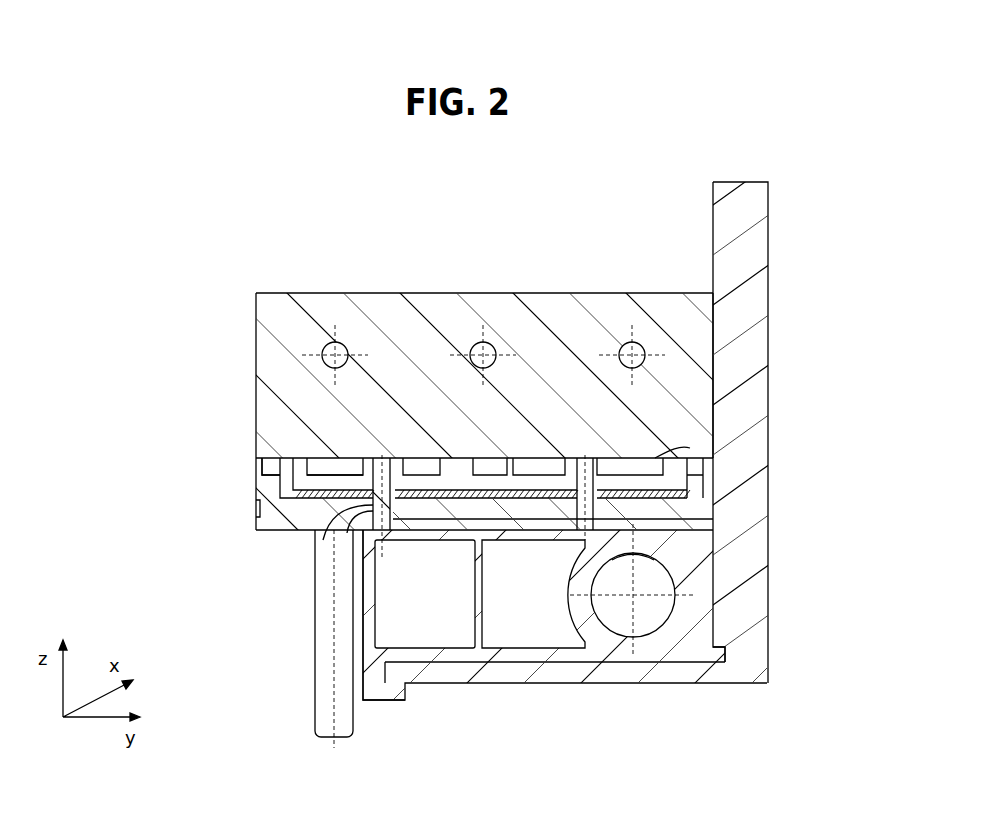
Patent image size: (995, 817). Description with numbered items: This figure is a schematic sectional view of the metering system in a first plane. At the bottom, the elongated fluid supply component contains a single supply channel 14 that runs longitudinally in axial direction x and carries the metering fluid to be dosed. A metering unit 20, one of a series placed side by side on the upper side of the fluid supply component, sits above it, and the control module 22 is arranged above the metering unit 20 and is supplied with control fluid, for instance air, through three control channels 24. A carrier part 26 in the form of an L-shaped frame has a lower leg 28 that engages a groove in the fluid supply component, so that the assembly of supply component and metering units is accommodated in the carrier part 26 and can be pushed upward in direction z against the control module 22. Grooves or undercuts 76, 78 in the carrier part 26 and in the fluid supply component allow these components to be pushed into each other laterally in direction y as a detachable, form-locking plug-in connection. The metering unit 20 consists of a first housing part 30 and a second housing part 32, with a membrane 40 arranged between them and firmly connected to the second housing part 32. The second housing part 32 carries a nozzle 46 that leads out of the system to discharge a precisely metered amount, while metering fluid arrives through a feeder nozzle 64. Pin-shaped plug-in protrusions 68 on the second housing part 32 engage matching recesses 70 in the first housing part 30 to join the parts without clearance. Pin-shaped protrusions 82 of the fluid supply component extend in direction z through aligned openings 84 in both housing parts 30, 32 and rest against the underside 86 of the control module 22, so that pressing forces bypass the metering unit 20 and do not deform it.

The supply channel 14 is at (663, 583).
The metering unit 20 is at (158, 493).
The control module 22 is at (515, 321).
The control channel 24 is at (329, 347).
The carrier part 26 is at (753, 242).
The lower leg 28 is at (558, 684).
The first housing part 30 is at (258, 478).
The second housing part 32 is at (267, 515).
The membrane 40 is at (713, 522).
The nozzle 46 is at (318, 692).
The feeder nozzle 64 is at (617, 557).
The plug-in protrusion 68 is at (257, 460).
The recess 70 is at (253, 421).
The undercut 76 is at (723, 652).
The undercut 78 is at (404, 692).
The pin-shaped protrusion 82 is at (337, 507).
The opening 84 is at (347, 508).
The underside 86 is at (655, 448).